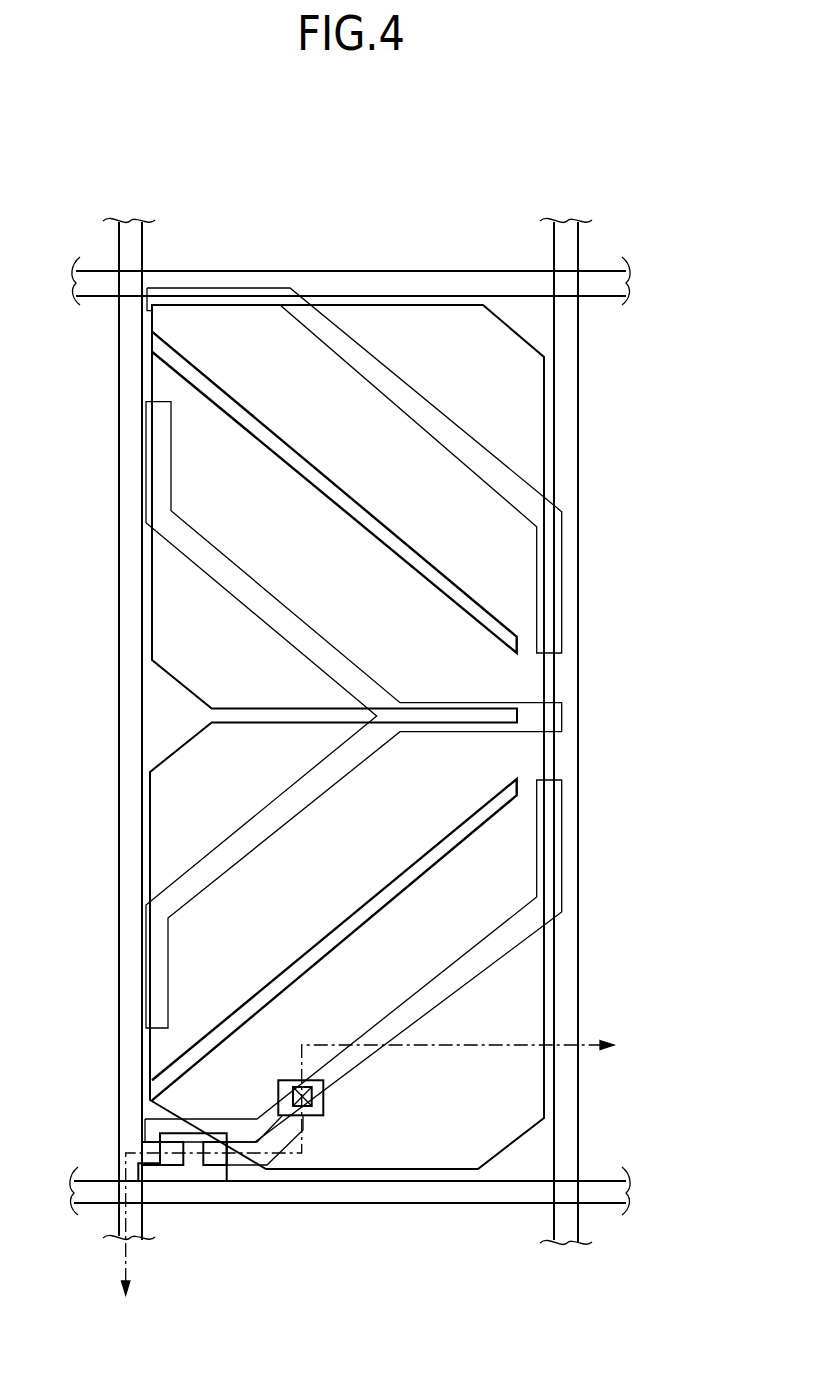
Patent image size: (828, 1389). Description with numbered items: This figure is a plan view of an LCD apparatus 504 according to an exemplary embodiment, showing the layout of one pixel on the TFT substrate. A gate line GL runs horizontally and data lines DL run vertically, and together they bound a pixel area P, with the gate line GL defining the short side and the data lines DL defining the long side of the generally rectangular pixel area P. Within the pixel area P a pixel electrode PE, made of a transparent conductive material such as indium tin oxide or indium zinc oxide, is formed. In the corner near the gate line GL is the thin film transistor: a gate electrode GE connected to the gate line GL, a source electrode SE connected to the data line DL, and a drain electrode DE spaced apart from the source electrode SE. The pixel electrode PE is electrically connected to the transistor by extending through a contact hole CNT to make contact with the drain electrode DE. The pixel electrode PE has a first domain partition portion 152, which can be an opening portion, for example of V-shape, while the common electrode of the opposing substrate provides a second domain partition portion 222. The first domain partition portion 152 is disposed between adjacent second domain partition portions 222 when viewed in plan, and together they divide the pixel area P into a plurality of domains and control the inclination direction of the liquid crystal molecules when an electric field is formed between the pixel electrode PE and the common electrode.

The LCD apparatus 504 is at (377, 157).
The pixel area P is at (380, 475).
The pixel electrode PE is at (512, 873).
The first domain partition portion 152 is at (478, 821).
The second domain partition portion 222 is at (478, 955).
The gate line GL is at (626, 1192).
The data line DL is at (553, 1244).
The gate electrode GE is at (192, 1165).
The source electrode SE is at (170, 1165).
The drain electrode DE is at (233, 1165).
The contact hole CNT is at (307, 1118).